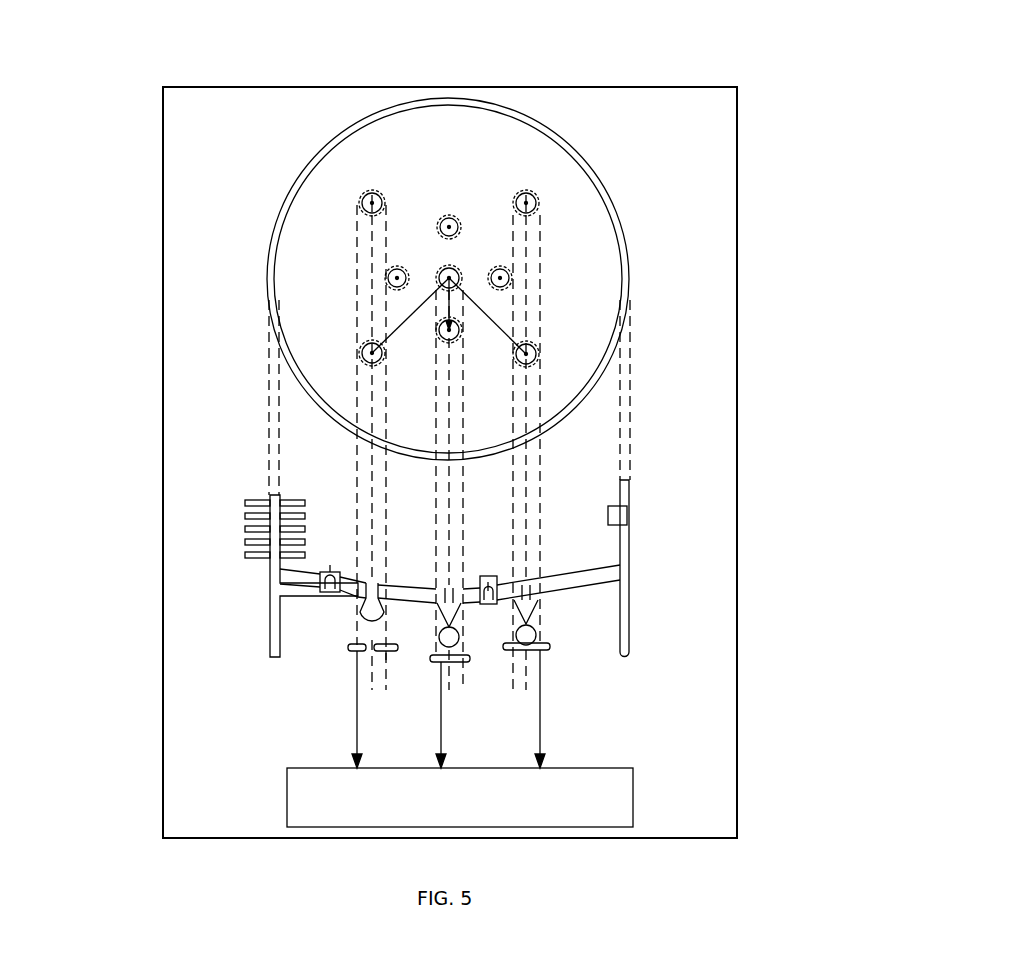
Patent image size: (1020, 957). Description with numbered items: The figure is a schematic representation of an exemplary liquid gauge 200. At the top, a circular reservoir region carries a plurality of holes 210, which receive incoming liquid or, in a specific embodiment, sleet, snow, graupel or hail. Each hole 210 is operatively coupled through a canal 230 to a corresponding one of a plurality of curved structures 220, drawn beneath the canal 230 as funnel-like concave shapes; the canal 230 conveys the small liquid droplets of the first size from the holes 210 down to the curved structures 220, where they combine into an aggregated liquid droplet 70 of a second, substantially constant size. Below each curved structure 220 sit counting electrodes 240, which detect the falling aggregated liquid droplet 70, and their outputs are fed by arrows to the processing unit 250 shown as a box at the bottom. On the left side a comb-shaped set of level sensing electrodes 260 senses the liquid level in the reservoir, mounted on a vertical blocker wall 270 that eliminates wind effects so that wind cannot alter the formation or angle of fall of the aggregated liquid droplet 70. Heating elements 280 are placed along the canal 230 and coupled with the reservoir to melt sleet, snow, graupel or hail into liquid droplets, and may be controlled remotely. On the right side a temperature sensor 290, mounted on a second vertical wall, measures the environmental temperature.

The liquid gauge 200 is at (500, 79).
The holes 210 is at (672, 203).
The curved structures 220 is at (392, 630).
The canal 230 is at (542, 586).
The counting electrodes 240 is at (383, 654).
The processing unit 250 is at (625, 765).
The level sensing electrodes 260 is at (240, 525).
The blocker wall 270 is at (258, 628).
The heating element 280 is at (306, 578).
The temperature sensor 290 is at (645, 518).
The aggregated liquid droplet 70 is at (463, 639).